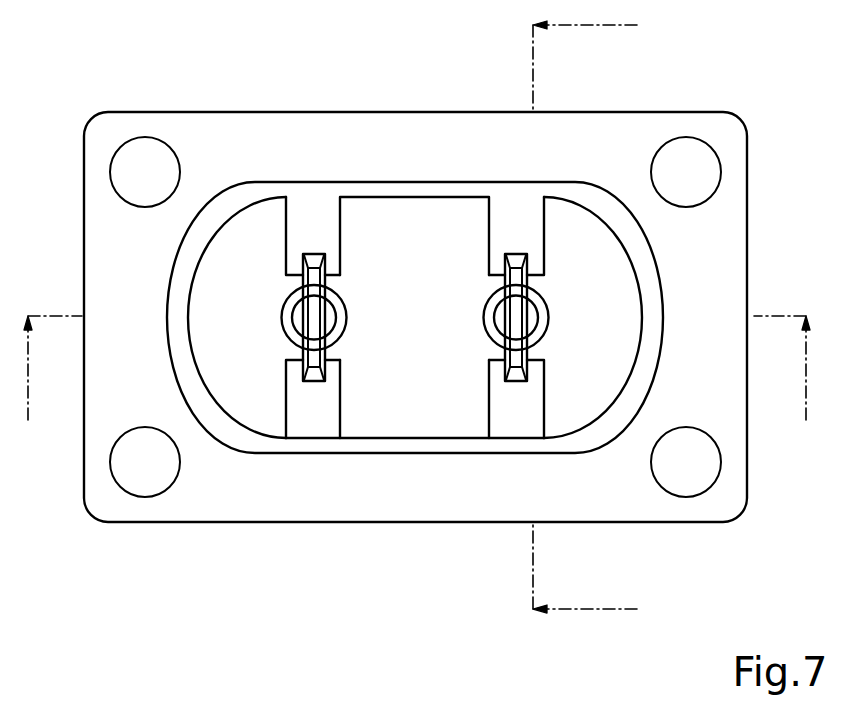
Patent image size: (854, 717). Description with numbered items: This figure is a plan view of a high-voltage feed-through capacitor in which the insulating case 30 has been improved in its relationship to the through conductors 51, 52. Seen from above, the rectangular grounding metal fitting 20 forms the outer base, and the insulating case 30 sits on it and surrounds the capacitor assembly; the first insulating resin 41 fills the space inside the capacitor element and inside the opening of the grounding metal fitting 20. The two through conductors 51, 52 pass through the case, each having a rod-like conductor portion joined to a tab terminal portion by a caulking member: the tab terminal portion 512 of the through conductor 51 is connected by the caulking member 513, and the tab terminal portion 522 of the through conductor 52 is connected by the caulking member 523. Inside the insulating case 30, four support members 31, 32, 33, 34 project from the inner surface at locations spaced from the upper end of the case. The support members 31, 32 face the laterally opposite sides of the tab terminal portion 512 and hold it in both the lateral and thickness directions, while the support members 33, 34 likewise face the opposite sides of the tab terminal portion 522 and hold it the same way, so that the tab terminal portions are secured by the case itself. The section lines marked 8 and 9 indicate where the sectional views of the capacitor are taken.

The grounding metal fitting 20 is at (660, 113).
The insulating case 30 is at (377, 182).
The support member 31 is at (488, 232).
The support member 32 is at (490, 402).
The support member 33 is at (287, 230).
The support member 34 is at (287, 402).
The first insulating resin 41 is at (582, 393).
The through conductor 51 is at (516, 254).
The through conductor 52 is at (314, 254).
The tab terminal portion 512 is at (530, 279).
The caulking member 513 is at (550, 317).
The tab terminal portion 522 is at (300, 279).
The caulking member 523 is at (282, 317).
The section line 8- 8 is at (417, 389).
The section line 9- 9 is at (598, 314).